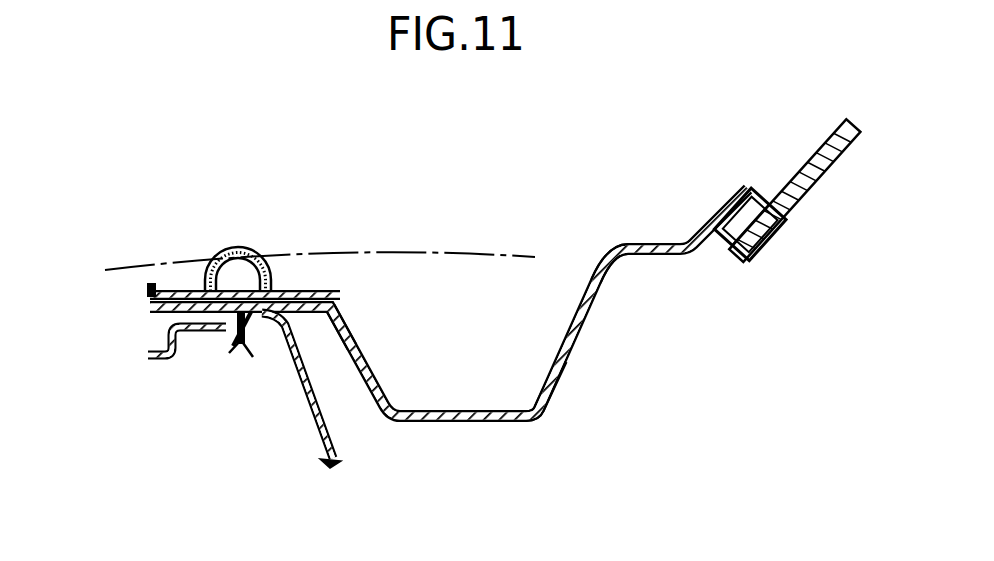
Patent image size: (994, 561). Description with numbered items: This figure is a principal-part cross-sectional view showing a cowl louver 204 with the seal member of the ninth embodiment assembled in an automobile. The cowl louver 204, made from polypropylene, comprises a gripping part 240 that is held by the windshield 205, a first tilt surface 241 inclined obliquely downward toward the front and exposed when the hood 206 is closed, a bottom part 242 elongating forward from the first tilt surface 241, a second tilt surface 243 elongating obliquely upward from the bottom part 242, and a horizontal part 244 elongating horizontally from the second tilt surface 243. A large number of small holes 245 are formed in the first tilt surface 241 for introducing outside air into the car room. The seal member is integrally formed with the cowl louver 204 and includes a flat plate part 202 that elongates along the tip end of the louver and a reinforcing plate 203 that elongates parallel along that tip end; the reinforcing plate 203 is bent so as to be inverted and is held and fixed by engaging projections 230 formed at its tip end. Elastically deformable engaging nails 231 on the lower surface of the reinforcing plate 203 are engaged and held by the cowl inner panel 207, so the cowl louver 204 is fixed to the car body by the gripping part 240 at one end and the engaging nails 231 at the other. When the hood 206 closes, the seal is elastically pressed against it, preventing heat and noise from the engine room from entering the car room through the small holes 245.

The flat plate part 202 is at (186, 291).
The reinforcing plate 203 is at (160, 313).
The cowl louver 204 is at (537, 422).
The windshield 205 is at (817, 180).
The hood 206 is at (477, 256).
The cowl inner panel 207 is at (315, 423).
The engaging projections 230 is at (344, 305).
The engaging nails 231 is at (253, 342).
The gripping part 240 is at (733, 250).
The first tilt surface 241 is at (592, 313).
The bottom part 242 is at (455, 423).
The second tilt surface 243 is at (387, 380).
The horizontal part 244 is at (296, 290).
The small holes 245 is at (577, 350).